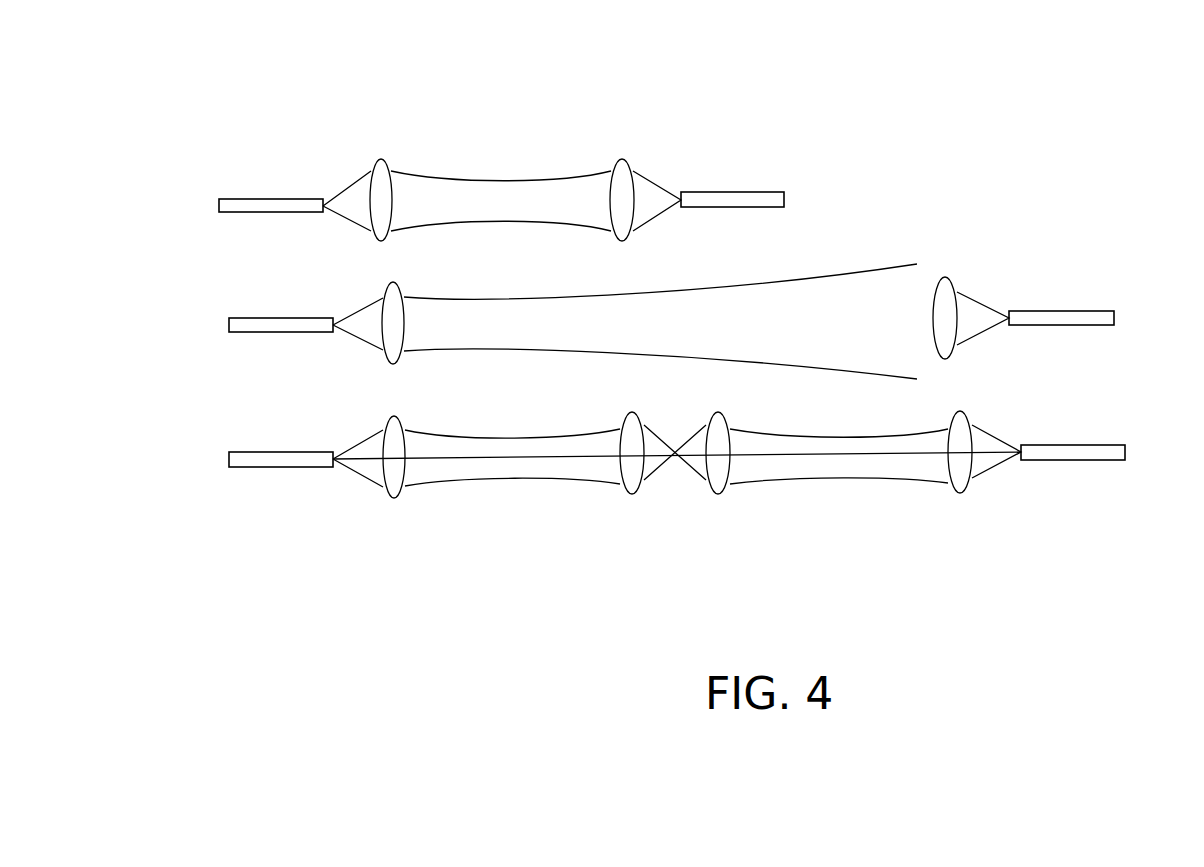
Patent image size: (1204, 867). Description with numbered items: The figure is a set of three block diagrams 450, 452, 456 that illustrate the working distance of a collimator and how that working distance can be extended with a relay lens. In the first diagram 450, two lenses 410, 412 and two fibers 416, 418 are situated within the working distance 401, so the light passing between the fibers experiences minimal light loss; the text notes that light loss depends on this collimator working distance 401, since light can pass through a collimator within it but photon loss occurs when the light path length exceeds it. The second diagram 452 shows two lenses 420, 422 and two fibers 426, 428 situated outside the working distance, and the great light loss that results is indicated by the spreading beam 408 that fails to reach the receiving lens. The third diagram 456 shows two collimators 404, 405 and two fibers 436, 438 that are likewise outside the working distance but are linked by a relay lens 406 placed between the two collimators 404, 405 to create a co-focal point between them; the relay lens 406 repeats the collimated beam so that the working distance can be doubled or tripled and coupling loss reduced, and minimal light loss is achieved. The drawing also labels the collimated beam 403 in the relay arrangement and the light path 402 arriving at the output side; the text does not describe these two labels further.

The working distance 401 is at (520, 172).
The third optical beam path 402 is at (955, 410).
The third optical beam 403 is at (672, 450).
The collimator 404 is at (970, 480).
The collimator 405 is at (393, 490).
The relay lens 406 is at (720, 495).
The light loss 408 is at (897, 377).
The lens 410 is at (391, 160).
The lens 412 is at (622, 157).
The fiber 416 is at (300, 198).
The fiber 418 is at (705, 192).
The lens 420 is at (393, 283).
The lens 422 is at (955, 280).
The fiber 426 is at (306, 335).
The fiber 428 is at (1080, 310).
The fiber 436 is at (292, 469).
The fiber 438 is at (1055, 463).
The diagram 450 is at (659, 92).
The diagram 452 is at (1011, 230).
The diagram 456 is at (888, 572).